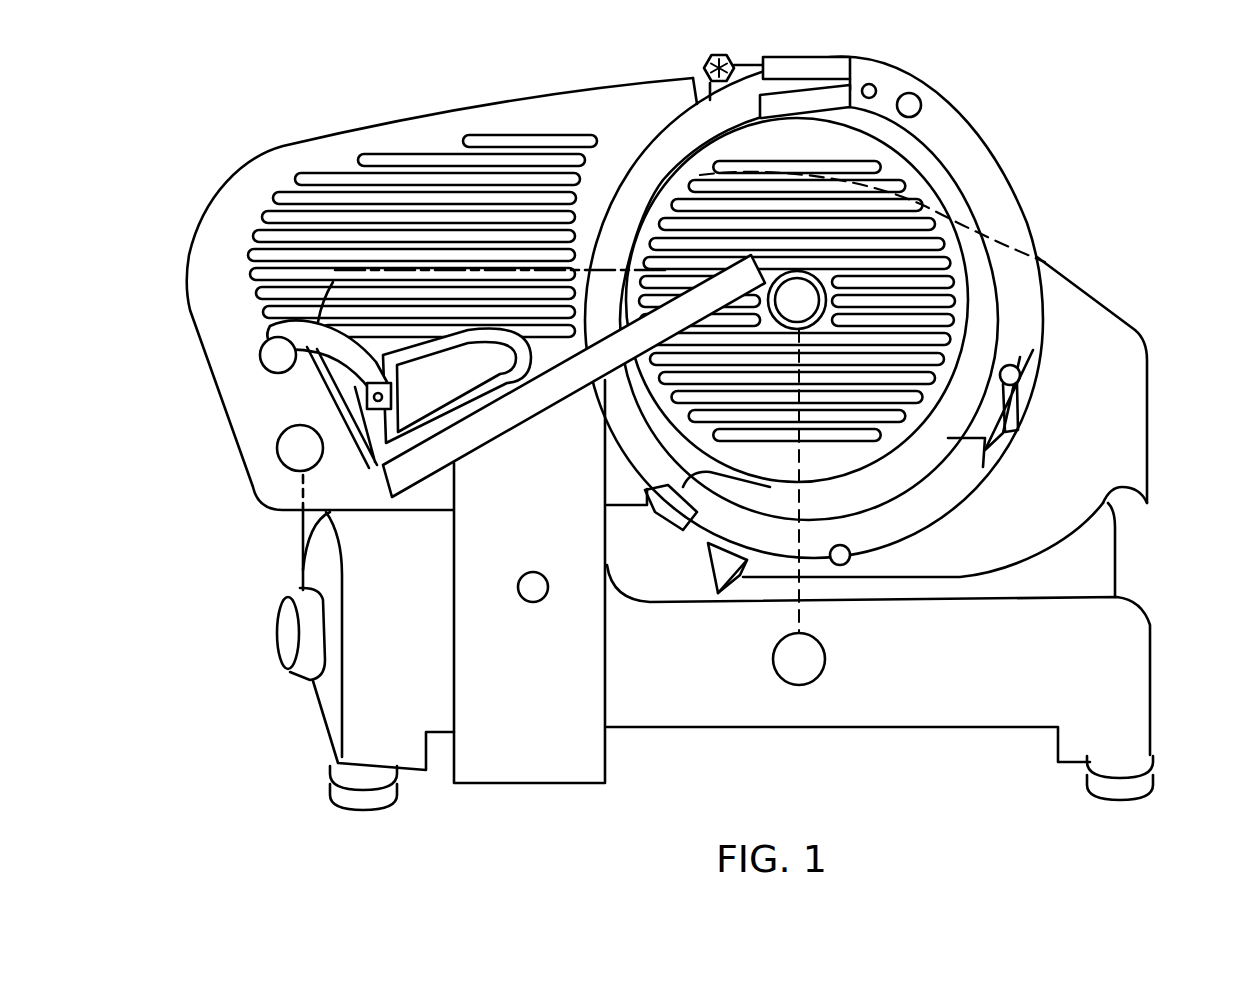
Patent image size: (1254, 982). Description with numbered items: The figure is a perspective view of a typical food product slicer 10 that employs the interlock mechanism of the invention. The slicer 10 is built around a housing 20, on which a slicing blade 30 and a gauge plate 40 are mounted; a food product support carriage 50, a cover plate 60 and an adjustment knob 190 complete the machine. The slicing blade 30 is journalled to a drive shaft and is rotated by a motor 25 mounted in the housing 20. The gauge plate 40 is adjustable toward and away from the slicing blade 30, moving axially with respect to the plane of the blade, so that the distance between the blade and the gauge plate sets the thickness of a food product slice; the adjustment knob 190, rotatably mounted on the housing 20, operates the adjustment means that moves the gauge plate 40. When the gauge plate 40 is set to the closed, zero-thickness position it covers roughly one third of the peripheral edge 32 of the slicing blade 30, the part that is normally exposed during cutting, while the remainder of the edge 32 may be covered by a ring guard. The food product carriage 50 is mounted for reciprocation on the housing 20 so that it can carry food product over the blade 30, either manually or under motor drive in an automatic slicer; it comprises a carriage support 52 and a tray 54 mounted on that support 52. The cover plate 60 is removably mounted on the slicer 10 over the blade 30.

The food product slicer 10 is at (707, 416).
The housing 20 is at (1150, 435).
The motor 25 is at (827, 660).
The slicing blade 30 is at (680, 137).
The peripheral edge 32 is at (630, 158).
The gauge plate 40 is at (455, 207).
The food product support carriage 50 is at (413, 532).
The carriage support 52 is at (608, 707).
The tray 54 is at (450, 442).
The cover plate 60 is at (1008, 225).
The adjustment knob 190 is at (287, 640).